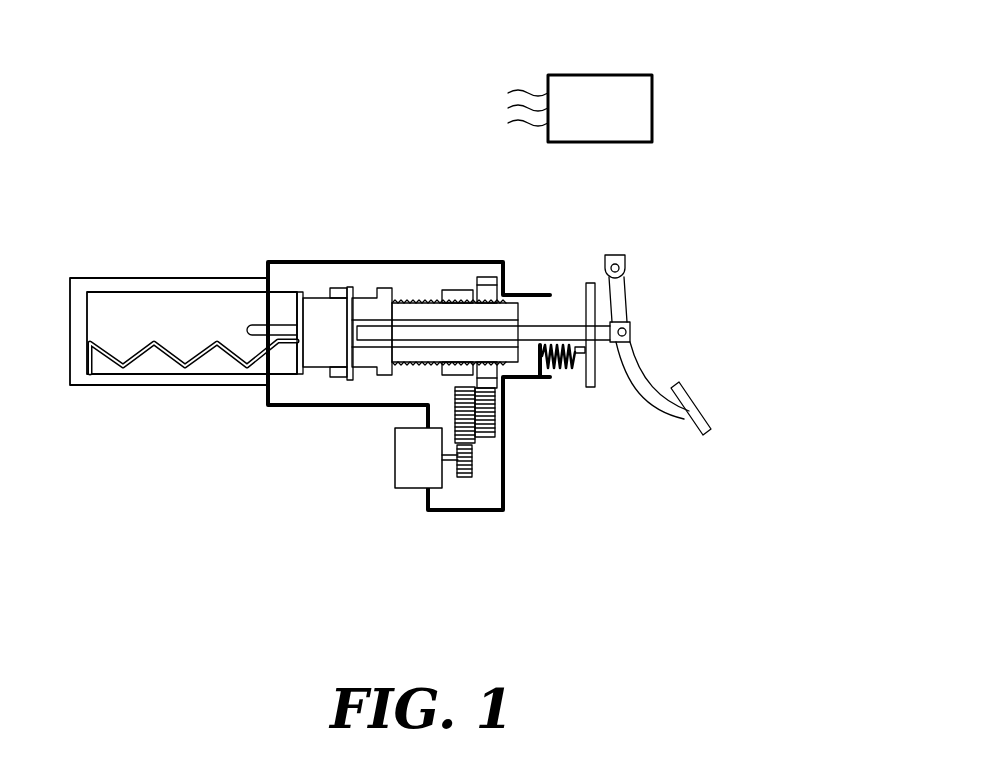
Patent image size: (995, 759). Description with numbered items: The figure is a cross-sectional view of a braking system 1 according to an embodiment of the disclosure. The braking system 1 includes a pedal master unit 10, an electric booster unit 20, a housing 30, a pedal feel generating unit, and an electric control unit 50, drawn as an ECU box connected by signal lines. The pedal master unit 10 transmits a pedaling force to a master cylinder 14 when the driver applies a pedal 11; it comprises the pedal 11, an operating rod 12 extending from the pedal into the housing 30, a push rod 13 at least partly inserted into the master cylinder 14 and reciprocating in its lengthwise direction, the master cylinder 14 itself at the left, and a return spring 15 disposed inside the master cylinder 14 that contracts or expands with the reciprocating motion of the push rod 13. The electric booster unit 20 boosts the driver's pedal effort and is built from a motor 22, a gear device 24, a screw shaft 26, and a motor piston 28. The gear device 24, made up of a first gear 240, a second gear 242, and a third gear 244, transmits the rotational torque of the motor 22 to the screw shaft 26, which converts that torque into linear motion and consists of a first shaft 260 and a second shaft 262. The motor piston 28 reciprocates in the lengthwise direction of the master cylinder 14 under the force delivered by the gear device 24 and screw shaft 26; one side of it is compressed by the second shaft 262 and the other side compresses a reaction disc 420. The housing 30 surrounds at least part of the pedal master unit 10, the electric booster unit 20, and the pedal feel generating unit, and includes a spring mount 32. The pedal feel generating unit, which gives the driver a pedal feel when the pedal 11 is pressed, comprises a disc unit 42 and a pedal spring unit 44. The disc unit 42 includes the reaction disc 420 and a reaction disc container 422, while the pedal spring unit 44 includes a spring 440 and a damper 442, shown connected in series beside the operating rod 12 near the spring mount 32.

The braking system 1 is at (432, 108).
The pedal master unit 10 is at (678, 330).
The pedal 11 is at (697, 410).
The operating rod 12 is at (558, 328).
The push rod 13 is at (250, 325).
The master cylinder 14 is at (135, 282).
The return spring 15 is at (130, 362).
The electric booster unit 20 is at (352, 535).
The motor 22 is at (403, 480).
The gear device 24 is at (550, 552).
The first gear 240 is at (463, 478).
The second gear 242 is at (480, 437).
The third gear 244 is at (492, 388).
The screw shaft 26 is at (477, 218).
The first shaft 260 is at (466, 291).
The second shaft 262 is at (415, 308).
The motor piston 28 is at (362, 368).
The housing 30 is at (495, 260).
The spring mount 32 is at (538, 375).
The disc unit 42 is at (358, 218).
The reaction disc 420 is at (327, 310).
The reaction disc container 422 is at (303, 296).
The pedal spring unit 44 is at (657, 471).
The spring 440 is at (580, 354).
The damper 442 is at (595, 350).
The electric control unit 50 is at (617, 75).